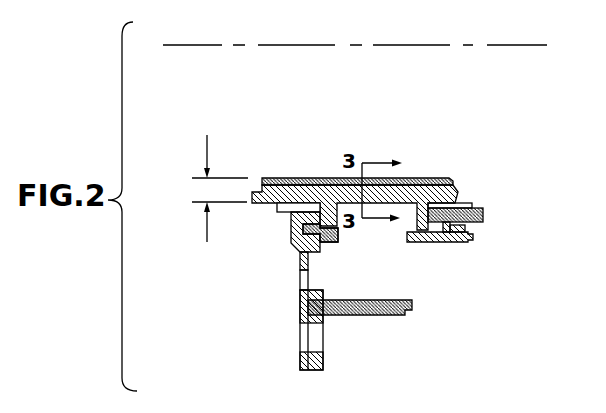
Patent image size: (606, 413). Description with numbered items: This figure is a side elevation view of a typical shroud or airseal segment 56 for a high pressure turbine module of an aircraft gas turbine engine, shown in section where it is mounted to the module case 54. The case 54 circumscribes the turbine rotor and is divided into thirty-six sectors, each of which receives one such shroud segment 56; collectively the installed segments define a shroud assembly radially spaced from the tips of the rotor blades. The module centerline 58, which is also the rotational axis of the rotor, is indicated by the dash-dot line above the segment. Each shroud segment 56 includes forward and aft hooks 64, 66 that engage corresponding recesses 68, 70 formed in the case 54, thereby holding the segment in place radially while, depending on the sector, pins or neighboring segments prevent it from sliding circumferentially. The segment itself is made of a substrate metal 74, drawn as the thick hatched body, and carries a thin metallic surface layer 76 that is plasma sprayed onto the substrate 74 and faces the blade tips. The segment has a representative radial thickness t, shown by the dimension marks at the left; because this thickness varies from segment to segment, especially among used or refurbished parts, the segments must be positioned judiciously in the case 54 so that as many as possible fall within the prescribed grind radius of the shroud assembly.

The case 54 is at (298, 262).
The shroud segment 56 is at (201, 120).
The centerline 58 is at (385, 46).
The forward hook 64 is at (323, 238).
The aft hook 66 is at (432, 242).
The recess 68 is at (305, 236).
The recess 70 is at (465, 231).
The substrate metal 74 is at (273, 192).
The metallic surface layer 76 is at (450, 178).